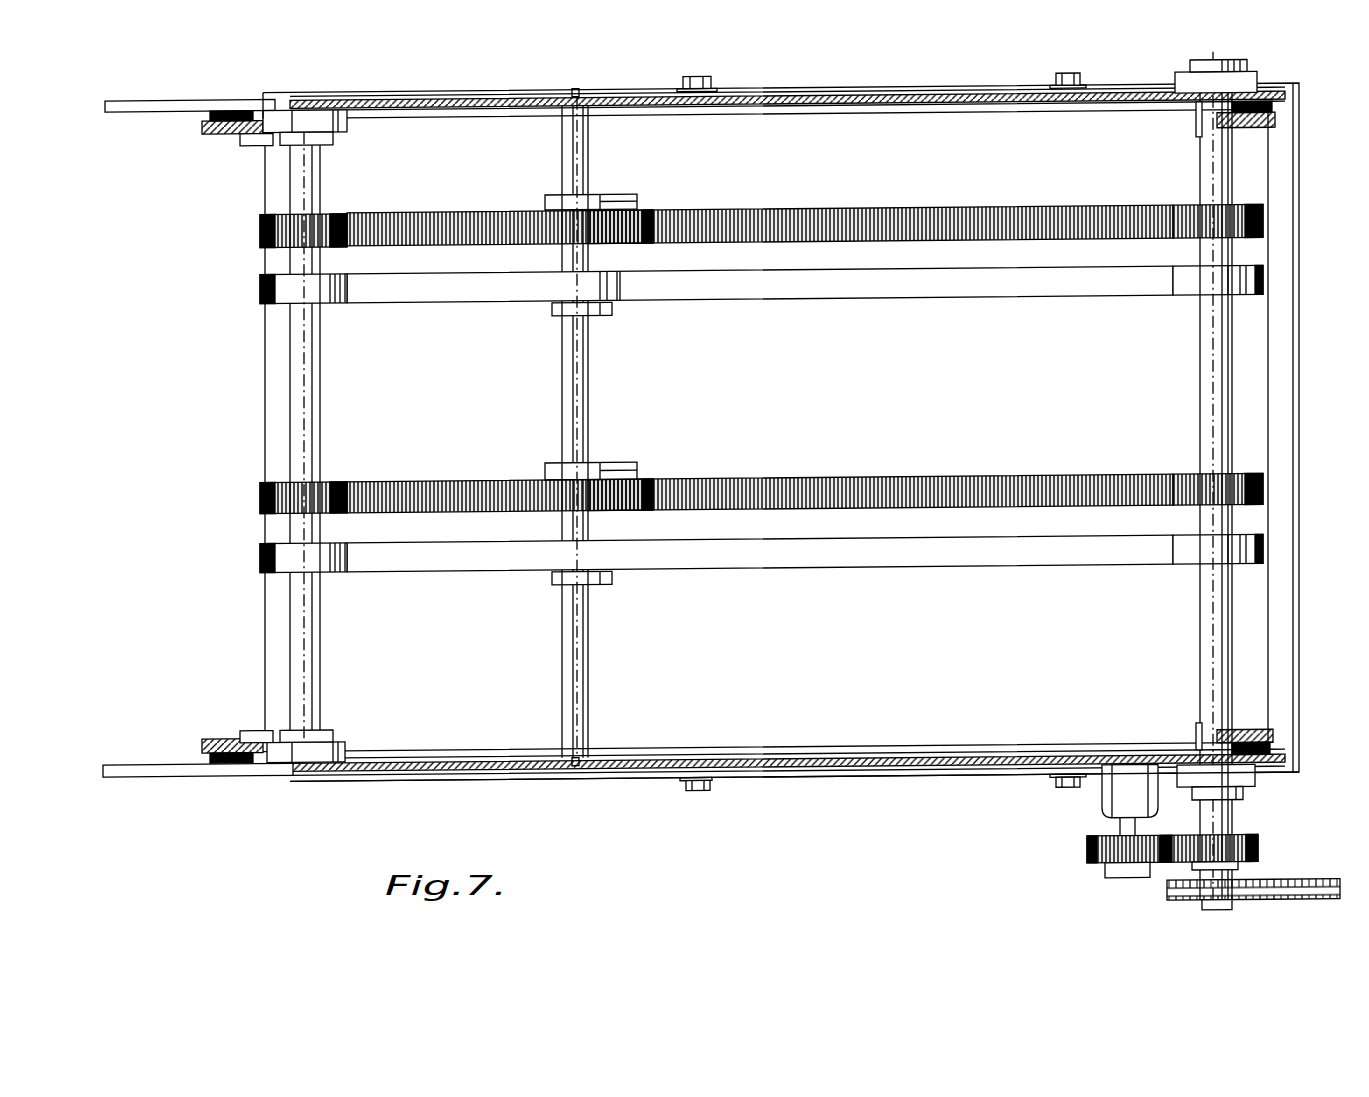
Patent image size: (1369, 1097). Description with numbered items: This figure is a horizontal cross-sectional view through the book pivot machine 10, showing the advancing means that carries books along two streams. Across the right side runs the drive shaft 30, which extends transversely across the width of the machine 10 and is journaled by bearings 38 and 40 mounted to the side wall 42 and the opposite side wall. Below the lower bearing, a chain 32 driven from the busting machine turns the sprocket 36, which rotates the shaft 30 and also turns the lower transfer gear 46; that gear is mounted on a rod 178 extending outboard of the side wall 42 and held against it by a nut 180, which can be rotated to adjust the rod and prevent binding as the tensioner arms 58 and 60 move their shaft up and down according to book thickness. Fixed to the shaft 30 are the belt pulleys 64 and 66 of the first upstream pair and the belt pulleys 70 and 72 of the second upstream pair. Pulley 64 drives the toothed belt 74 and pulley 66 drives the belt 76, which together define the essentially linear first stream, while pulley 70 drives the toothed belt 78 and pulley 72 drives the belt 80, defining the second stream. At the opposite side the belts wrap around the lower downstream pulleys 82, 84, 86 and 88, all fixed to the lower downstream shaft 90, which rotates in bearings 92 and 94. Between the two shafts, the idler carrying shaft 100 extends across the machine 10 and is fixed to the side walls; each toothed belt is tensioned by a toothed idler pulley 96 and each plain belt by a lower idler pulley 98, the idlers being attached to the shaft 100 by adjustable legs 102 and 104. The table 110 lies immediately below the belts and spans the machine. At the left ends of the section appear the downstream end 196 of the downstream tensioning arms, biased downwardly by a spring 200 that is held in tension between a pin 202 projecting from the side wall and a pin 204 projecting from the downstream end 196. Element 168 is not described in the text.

The book pivot machine 10 is at (912, 854).
The drive shaft 30 is at (1205, 676).
The chain 32 is at (1270, 896).
The sprocket 36 is at (1245, 844).
The bearing 38 is at (1262, 784).
The bearing 40 is at (1185, 90).
The side wall 42 is at (858, 100).
The lower transfer gear 46 is at (1088, 862).
The tensioner arm 58 is at (1270, 742).
The tensioner arm 60 is at (1272, 126).
The belt pulley 64 is at (1250, 214).
The belt pulley 66 is at (1252, 284).
The belt pulley 70 is at (1255, 483).
The belt pulley 72 is at (1240, 574).
The toothed belt 74 is at (820, 213).
The belt 76 is at (952, 296).
The toothed belt 78 is at (985, 482).
The belt 80 is at (940, 564).
The lower downstream pulley 82 is at (330, 215).
The lower downstream pulley 84 is at (330, 304).
The lower downstream pulley 86 is at (337, 482).
The lower downstream pulley 88 is at (328, 573).
The lower downstream shaft 90 is at (310, 428).
The bearing 92 is at (346, 123).
The bearing 94 is at (320, 736).
The toothed idler pulley 96 is at (632, 246).
The lower idler pulley 98 is at (618, 290).
The idler carrying shaft 100 is at (572, 712).
The leg 102 is at (620, 204).
The leg 104 is at (605, 320).
The table 110 is at (925, 746).
The seal 168 is at (1262, 112).
The rod 178 is at (1090, 834).
The nut 180 is at (1105, 798).
The downstream end 196 is at (212, 134).
The spring 200 is at (240, 110).
The pin 202 is at (256, 138).
The pin 204 is at (205, 119).